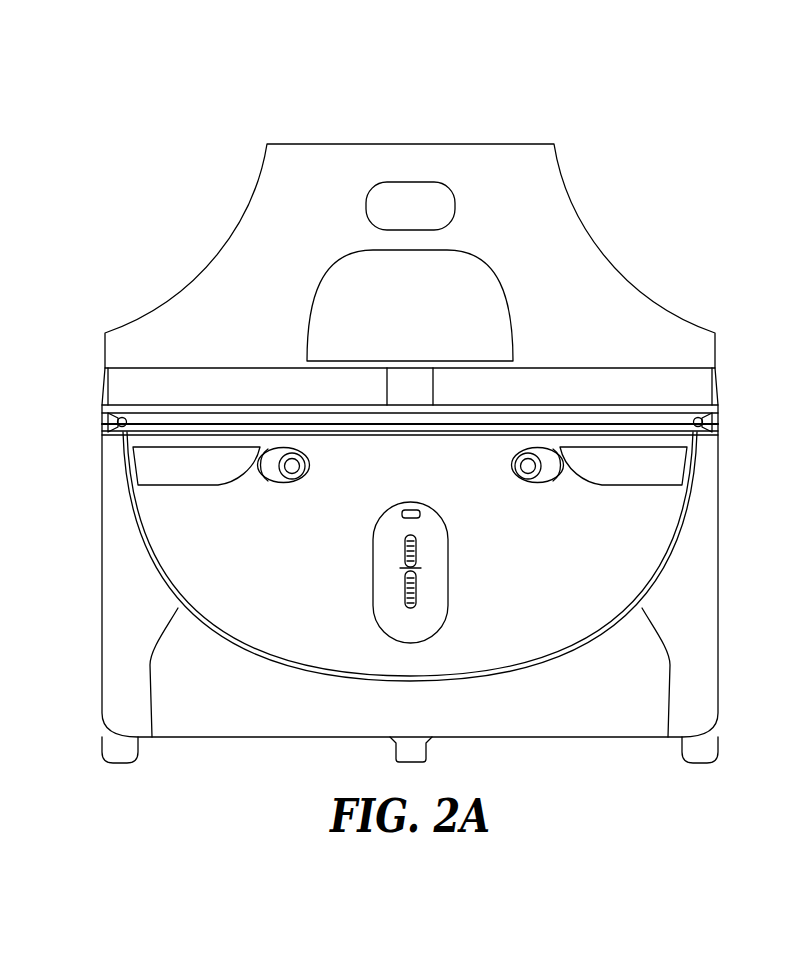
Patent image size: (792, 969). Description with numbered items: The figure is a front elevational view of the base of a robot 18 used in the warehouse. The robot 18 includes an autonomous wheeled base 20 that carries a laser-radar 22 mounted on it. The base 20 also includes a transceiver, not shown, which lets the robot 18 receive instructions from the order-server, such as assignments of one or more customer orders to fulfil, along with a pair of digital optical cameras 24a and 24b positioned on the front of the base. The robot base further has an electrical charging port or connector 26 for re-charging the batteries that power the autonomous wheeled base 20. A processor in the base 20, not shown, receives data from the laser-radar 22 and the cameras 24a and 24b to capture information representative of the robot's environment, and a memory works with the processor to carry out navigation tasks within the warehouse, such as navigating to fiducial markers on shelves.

The robot 18 is at (620, 172).
The autonomous wheeled base 20 is at (283, 579).
The laser-radar 22 is at (408, 385).
The digital optical camera 24a is at (281, 487).
The digital optical camera 24b is at (538, 487).
The electrical charging port or connector 26 is at (435, 588).